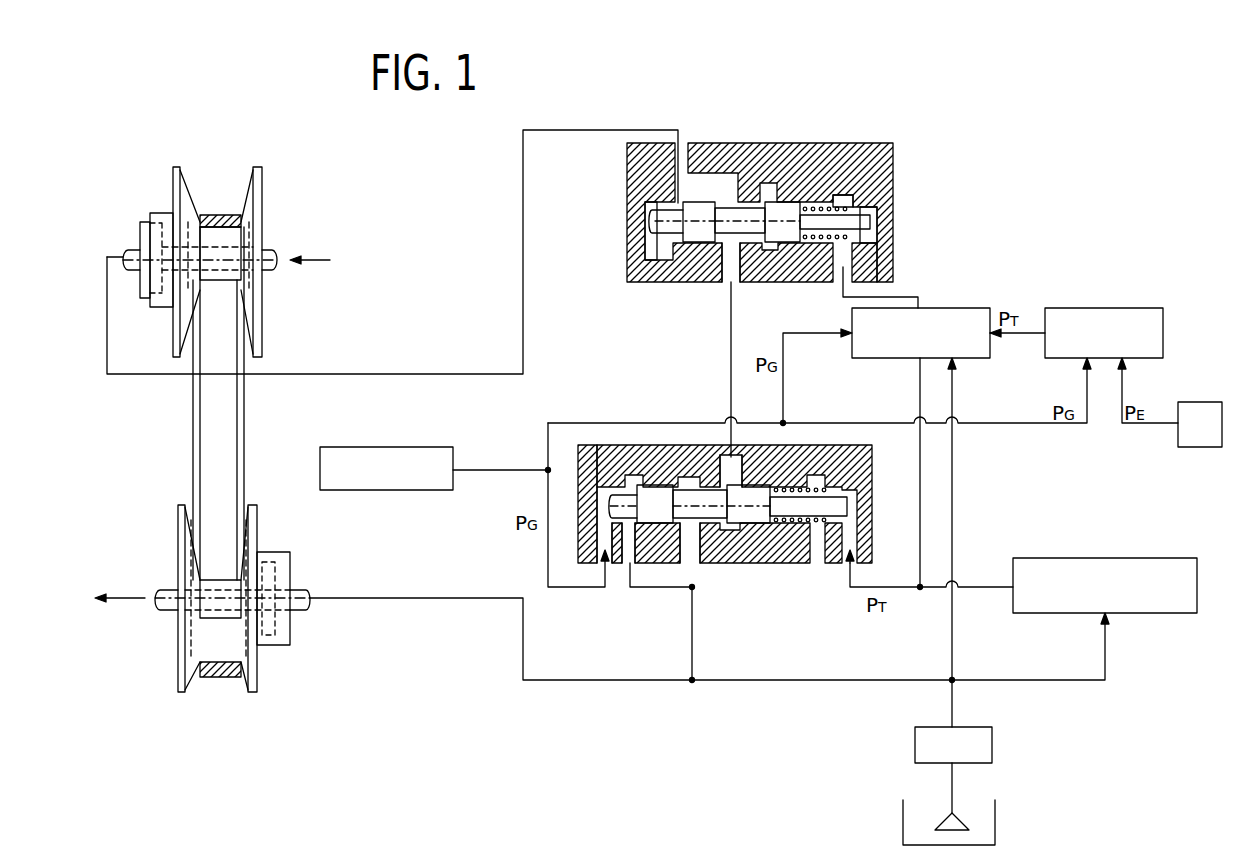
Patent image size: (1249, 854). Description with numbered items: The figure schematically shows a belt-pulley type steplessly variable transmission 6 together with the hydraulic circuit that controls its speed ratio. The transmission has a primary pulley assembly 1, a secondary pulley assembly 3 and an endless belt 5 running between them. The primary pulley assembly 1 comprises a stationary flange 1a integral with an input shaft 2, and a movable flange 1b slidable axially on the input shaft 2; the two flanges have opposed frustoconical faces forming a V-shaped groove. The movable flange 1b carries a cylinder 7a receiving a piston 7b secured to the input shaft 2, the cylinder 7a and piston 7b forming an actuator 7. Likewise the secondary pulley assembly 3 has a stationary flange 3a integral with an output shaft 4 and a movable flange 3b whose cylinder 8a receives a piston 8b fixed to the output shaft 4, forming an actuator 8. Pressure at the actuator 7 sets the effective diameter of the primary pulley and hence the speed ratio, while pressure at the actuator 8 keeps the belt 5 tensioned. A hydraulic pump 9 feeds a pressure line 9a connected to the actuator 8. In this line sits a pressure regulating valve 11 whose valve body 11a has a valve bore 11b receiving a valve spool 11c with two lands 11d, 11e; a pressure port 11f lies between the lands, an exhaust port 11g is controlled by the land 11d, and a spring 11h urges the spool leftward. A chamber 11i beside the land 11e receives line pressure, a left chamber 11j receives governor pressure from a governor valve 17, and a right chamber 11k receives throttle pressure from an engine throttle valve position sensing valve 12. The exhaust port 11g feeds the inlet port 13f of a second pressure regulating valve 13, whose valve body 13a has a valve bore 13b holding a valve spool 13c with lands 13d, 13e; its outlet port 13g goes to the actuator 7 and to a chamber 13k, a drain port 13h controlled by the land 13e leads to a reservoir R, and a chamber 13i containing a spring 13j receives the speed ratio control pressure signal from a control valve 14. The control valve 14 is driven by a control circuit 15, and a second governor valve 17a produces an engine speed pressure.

The primary pulley assembly 1 is at (247, 225).
The stationary flange 1a is at (254, 166).
The movable flange 1b is at (179, 166).
The input shaft 2 is at (277, 252).
The secondary pulley assembly 3 is at (189, 629).
The stationary flange 3a is at (186, 692).
The movable flange 3b is at (247, 692).
The output shaft 4 is at (158, 590).
The endless belt 5 is at (219, 214).
The steplessly variable transmission 6 is at (175, 430).
The actuator 7 is at (139, 282).
The cylinder 7a is at (158, 307).
The piston 7b is at (138, 290).
The actuator 8 is at (305, 570).
The cylinder 8a is at (290, 641).
The piston 8b is at (278, 572).
The hydraulic pump 9 is at (993, 748).
The pressure line 9a is at (875, 680).
The pressure regulating valve 11 is at (736, 512).
The valve body 11a is at (663, 458).
The valve bore 11b is at (660, 525).
The valve spool 11c is at (708, 495).
The land 11d is at (750, 520).
The land 11e is at (643, 497).
The pressure port 11f is at (697, 537).
The exhaust port 11g is at (733, 472).
The spring 11h is at (823, 478).
The right chamber 11k is at (855, 506).
The chamber 11i is at (628, 562).
The left chamber 11j is at (602, 493).
The engine throttle valve position sensing valve 12 is at (1137, 558).
The second pressure regulating valve 13 is at (768, 208).
The valve body 13a is at (852, 160).
The valve bore 13b is at (820, 202).
The valve spool 13c is at (745, 208).
The land 13d is at (693, 218).
The land 13e is at (787, 243).
The inlet port 13f is at (733, 258).
The outlet port 13g is at (733, 197).
The drain port 13h is at (778, 182).
The chamber 13i is at (853, 200).
The spring 13j is at (870, 247).
The chamber 13k is at (683, 180).
The control valve 14 is at (982, 307).
The control circuit 15 is at (1097, 307).
The governor valve 17 is at (414, 447).
The second governor valve 17a is at (1200, 401).
The reservoir R is at (995, 818).